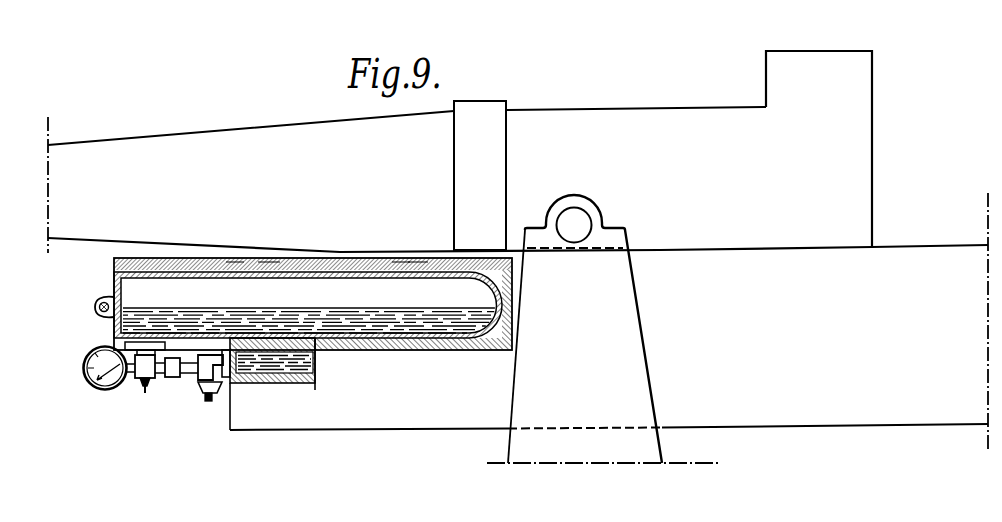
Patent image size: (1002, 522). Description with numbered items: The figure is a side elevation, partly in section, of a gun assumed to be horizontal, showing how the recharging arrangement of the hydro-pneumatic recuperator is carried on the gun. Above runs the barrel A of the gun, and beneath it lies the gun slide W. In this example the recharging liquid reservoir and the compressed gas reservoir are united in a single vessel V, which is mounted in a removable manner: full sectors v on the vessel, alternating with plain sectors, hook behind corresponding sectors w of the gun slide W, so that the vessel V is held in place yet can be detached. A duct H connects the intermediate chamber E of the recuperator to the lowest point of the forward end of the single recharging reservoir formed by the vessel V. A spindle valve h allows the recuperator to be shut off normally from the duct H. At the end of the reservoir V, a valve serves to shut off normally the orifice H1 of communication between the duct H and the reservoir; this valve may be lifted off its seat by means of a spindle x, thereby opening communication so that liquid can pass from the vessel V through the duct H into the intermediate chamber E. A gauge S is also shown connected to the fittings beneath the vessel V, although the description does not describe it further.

The barrel A is at (302, 137).
The single vessel V is at (137, 287).
The gun slide W is at (175, 263).
The sectors of the gun slide w is at (232, 270).
The full sectors v is at (267, 272).
The orifice of communication H1 is at (309, 307).
The pressure gauge S is at (88, 369).
The spindle x is at (145, 393).
The duct H is at (190, 370).
The spindle valve h is at (206, 402).
The intermediate chamber E is at (289, 366).